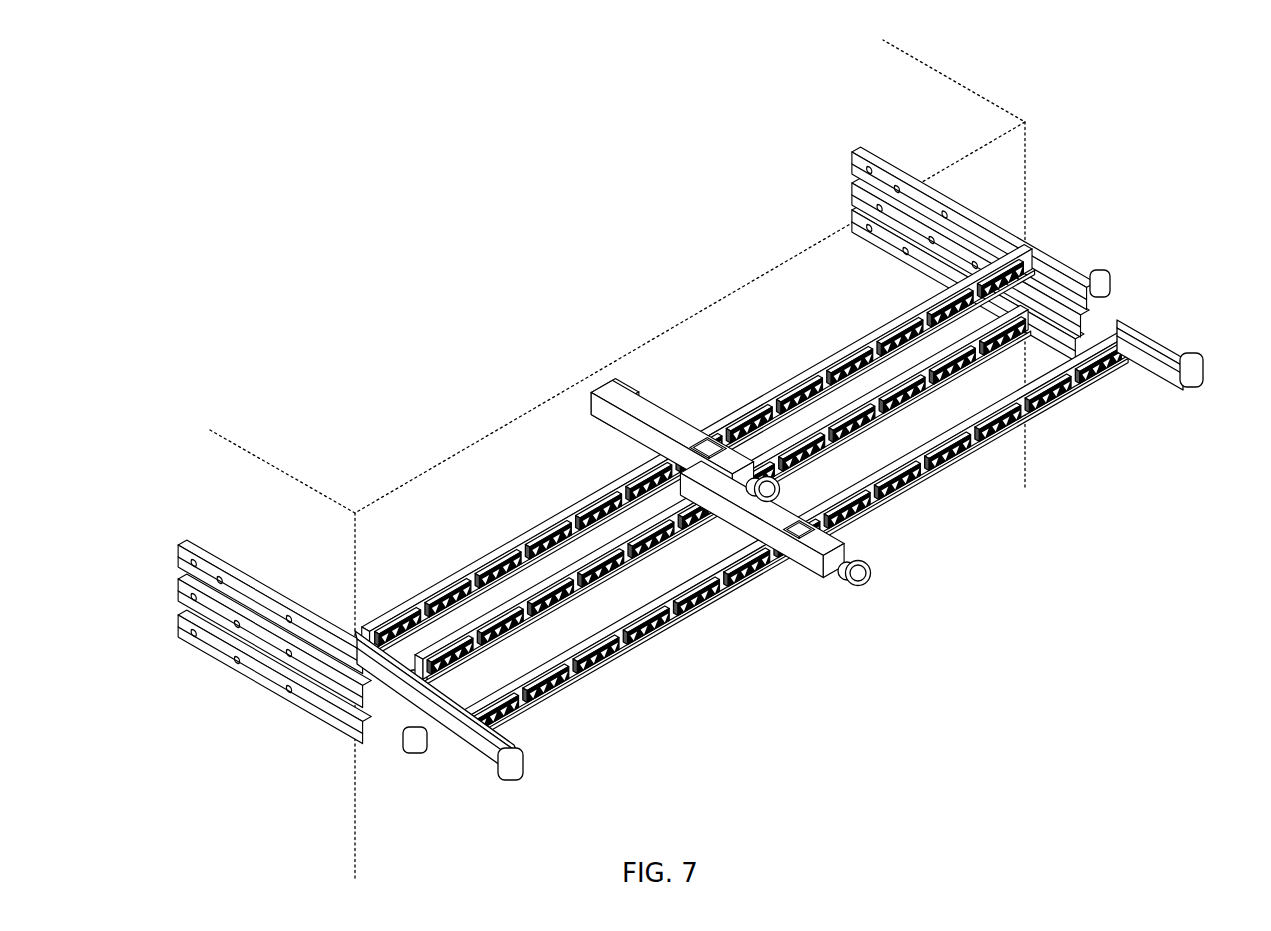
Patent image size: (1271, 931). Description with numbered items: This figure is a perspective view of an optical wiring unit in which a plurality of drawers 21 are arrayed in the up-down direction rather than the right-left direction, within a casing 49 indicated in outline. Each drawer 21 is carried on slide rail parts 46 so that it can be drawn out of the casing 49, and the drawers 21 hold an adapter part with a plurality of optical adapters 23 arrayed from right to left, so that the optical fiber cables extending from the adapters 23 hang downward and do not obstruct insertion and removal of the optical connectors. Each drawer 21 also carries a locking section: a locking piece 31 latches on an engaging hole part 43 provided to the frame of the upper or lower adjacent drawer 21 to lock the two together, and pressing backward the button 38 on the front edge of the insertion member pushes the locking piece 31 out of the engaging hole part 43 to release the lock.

The drawer 21 is at (1157, 362).
The optical adapter 23 is at (926, 456).
The locking piece 31 is at (596, 438).
The button 38 is at (871, 584).
The engaging hole part 43 is at (706, 446).
The slide rail part 46 is at (190, 594).
The casing 49 is at (1028, 170).